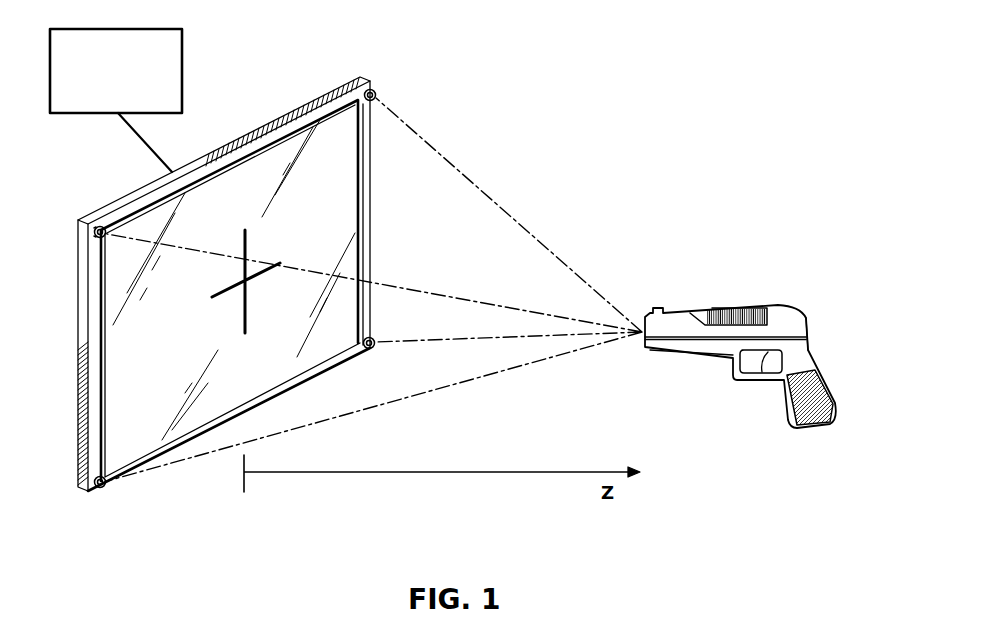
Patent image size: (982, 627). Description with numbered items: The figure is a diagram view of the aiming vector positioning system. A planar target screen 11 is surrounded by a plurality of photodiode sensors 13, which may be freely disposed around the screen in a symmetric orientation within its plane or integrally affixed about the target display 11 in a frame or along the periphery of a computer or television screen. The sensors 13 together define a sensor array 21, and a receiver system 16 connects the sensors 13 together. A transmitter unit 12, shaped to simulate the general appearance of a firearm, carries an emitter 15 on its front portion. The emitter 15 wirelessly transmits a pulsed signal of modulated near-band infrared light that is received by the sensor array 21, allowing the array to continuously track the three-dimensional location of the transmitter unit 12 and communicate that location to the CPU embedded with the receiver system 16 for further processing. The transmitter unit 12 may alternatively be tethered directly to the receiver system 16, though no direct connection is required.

The planar target screen 11 is at (347, 209).
The transmitter unit 12 is at (808, 322).
The photodiode sensors 13 is at (377, 92).
The emitter 15 is at (640, 338).
The receiver system 16 is at (182, 37).
The sensor array 21 is at (291, 95).